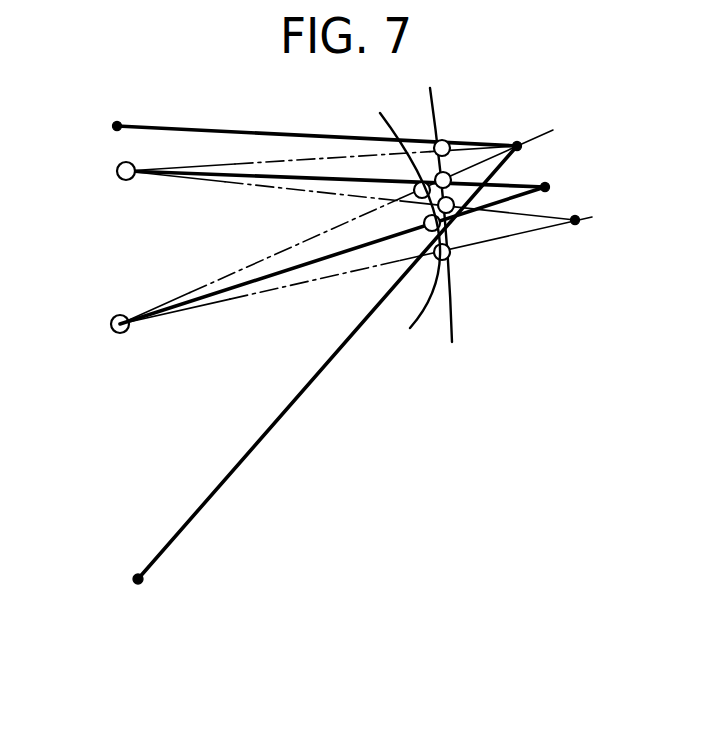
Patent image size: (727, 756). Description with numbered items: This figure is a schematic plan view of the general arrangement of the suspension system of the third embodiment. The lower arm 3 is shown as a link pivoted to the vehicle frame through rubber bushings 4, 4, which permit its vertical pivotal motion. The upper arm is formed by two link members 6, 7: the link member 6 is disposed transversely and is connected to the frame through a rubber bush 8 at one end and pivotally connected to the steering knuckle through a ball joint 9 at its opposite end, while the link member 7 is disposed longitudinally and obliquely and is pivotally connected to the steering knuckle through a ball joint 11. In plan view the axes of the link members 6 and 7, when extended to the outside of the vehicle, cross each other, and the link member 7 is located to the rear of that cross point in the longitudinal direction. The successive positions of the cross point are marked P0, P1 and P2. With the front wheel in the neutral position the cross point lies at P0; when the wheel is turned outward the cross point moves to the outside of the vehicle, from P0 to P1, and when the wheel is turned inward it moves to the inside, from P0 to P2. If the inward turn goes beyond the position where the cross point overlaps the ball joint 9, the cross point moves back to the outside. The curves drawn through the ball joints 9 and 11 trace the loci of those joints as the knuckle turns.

The lower arm 3 is at (292, 404).
The rubber bushing 4 is at (113, 125).
The link member 6 is at (292, 177).
The link member 7 is at (318, 262).
The rubber bush 8 is at (125, 181).
The ball joint 9 is at (446, 173).
The ball joint 11 is at (445, 228).
The cross point at neutral position P0 is at (547, 186).
The cross point at outward turned position P1 is at (575, 224).
The cross point at inward turned position P2 is at (518, 144).